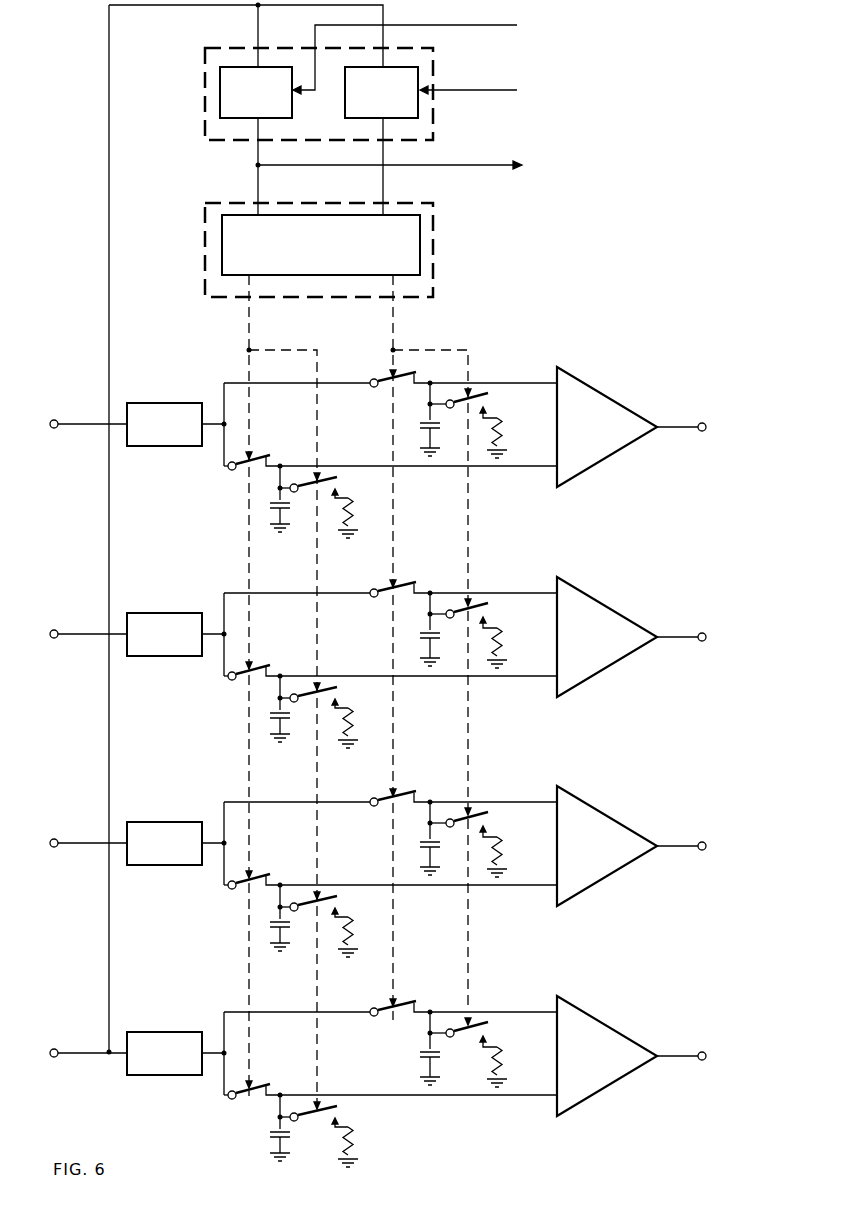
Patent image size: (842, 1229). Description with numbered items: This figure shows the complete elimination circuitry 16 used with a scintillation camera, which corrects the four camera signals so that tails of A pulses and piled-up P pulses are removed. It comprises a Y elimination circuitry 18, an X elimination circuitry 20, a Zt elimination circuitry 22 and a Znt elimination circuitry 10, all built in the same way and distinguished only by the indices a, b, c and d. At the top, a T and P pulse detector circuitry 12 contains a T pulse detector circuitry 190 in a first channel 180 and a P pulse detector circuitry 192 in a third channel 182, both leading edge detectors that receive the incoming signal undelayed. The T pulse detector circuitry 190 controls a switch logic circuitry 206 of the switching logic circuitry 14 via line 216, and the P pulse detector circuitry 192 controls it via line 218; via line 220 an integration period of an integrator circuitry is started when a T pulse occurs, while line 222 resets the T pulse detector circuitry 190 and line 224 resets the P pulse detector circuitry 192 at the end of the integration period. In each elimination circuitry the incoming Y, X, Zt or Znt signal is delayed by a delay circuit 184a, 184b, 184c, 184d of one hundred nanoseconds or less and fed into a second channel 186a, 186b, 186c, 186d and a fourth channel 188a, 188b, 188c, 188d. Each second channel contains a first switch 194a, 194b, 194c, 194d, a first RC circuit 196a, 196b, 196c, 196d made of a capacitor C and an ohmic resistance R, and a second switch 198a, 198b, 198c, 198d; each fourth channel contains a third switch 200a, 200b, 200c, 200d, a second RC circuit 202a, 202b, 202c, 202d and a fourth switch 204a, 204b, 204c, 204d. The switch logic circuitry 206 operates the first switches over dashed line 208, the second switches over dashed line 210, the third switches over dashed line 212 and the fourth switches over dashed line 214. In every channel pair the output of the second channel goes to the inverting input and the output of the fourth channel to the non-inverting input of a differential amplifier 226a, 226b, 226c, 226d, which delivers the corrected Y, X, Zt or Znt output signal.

The first channel 180 is at (256, 33).
The third channel 182 is at (385, 35).
The T pulse detector circuitry 190 is at (224, 80).
The P pulse detector circuitry 192 is at (412, 76).
The T and P pulse detector circuitry 12 is at (183, 125).
The line 222 is at (517, 27).
The line 224 is at (517, 92).
The line 216 is at (258, 183).
The line 218 is at (385, 180).
The line 220 is at (517, 167).
The switch logic circuitry 206 is at (412, 228).
The switching logic circuitry 14 is at (183, 275).
The dashed line 208 is at (247, 350).
The dashed line 210 is at (312, 352).
The dashed line 212 is at (390, 358).
The dashed line 214 is at (460, 352).
The complex elimination circuitry 16 is at (558, 292).
The delay circuit 184a is at (141, 403).
The delay circuit 184b is at (137, 616).
The delay circuit 184c is at (137, 825).
The delay circuit 184d is at (137, 1035).
The fourth channel 188a is at (251, 372).
The fourth channel 188b is at (287, 620).
The fourth channel 188c is at (287, 829).
The fourth channel 188d is at (287, 1039).
The second channel 186a is at (225, 467).
The second channel 186b is at (230, 688).
The second channel 186c is at (230, 897).
The second channel 186d is at (230, 1107).
The first switch 194a is at (250, 471).
The first switch 194b is at (407, 690).
The first switch 194c is at (407, 899).
The first switch 194d is at (407, 1109).
The first RC circuit 196a is at (326, 506).
The first RC circuit 196b is at (343, 737).
The first RC circuit 196c is at (343, 946).
The first RC circuit 196d is at (355, 1156).
The second switch 198a is at (342, 478).
The second switch 198b is at (337, 696).
The second switch 198c is at (336, 905).
The second switch 198d is at (337, 1115).
The third switch 200a is at (377, 388).
The third switch 200b is at (450, 603).
The third switch 200c is at (450, 812).
The third switch 200d is at (450, 1022).
The second RC circuit 202a is at (460, 434).
The second RC circuit 202b is at (437, 652).
The second RC circuit 202c is at (436, 861).
The second RC circuit 202d is at (437, 1071).
The fourth switch 204a is at (488, 397).
The fourth switch 204b is at (487, 615).
The fourth switch 204c is at (486, 824).
The fourth switch 204d is at (487, 1034).
The differential amplifier 226a is at (598, 446).
The differential amplifier 226b is at (642, 644).
The differential amplifier 226c is at (644, 853).
The differential amplifier 226d is at (648, 1063).
The Y elimination circuitry 18 is at (543, 439).
The X elimination circuitry 20 is at (516, 648).
The Zt elimination circuitry 22 is at (516, 857).
The Znt elimination circuitry 10 is at (516, 1067).